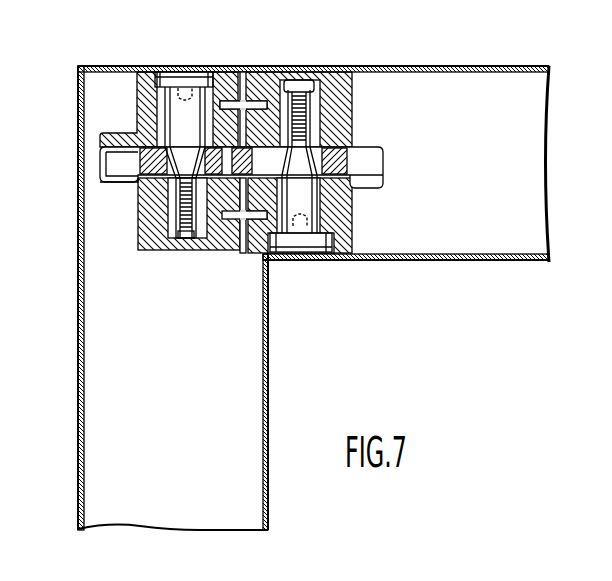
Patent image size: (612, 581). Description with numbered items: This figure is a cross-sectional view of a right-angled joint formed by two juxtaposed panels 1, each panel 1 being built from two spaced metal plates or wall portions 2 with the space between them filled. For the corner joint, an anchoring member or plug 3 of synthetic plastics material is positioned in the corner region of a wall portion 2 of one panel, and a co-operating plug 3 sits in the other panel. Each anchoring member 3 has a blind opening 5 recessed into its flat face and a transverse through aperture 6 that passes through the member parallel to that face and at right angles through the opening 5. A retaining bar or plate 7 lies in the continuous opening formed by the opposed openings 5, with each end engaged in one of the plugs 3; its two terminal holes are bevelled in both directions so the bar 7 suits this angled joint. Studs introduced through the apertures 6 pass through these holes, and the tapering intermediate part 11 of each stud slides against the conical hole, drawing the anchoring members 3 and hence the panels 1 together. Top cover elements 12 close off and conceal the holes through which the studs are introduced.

The panel 1 is at (452, 67).
The panel plate or wall portion 2 is at (80, 262).
The anchoring member or plug 3 is at (141, 69).
The blind opening 5 is at (110, 157).
The transverse through aperture 6 is at (323, 212).
The retaining bar or plate 7 is at (282, 257).
The intermediate tapering part 11 is at (140, 183).
The top cover element 12 is at (193, 68).